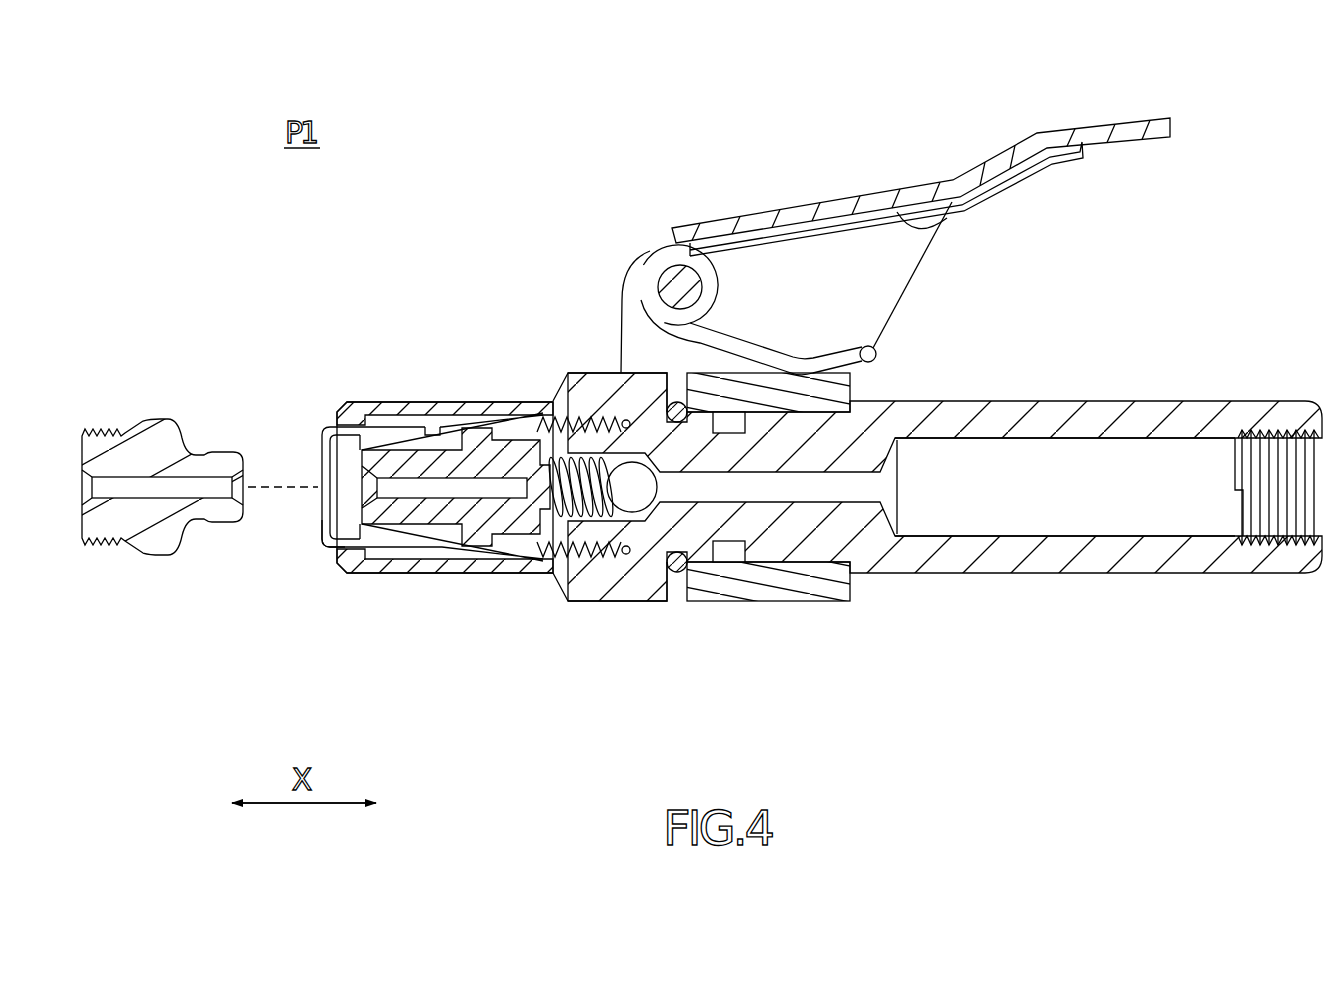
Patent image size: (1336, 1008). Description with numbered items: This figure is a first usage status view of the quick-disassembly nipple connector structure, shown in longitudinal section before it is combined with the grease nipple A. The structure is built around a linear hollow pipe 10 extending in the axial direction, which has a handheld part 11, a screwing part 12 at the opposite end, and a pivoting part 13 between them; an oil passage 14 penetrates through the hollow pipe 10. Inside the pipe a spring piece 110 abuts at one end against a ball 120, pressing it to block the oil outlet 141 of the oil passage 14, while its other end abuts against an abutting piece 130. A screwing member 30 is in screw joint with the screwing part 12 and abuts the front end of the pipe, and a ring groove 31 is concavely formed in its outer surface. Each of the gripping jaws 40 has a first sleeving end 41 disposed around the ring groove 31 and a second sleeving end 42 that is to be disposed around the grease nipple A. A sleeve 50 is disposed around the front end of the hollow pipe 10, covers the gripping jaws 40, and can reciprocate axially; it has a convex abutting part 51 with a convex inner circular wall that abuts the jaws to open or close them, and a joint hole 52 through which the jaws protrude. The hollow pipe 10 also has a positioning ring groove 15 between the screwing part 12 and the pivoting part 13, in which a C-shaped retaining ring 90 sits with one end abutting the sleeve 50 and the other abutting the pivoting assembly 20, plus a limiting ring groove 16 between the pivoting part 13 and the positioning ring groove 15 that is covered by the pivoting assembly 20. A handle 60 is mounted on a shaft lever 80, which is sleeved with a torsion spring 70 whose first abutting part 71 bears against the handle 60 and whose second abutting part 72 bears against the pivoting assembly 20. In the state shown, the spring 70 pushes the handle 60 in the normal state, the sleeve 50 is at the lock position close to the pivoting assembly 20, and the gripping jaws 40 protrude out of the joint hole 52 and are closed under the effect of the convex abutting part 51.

The hollow pipe 10 is at (917, 517).
The handheld part 11 is at (1160, 407).
The screwing part 12 is at (590, 601).
The pivoting part 13 is at (812, 575).
The oil passage 14 is at (972, 515).
The positioning ring groove 15 is at (703, 562).
The limiting ring groove 16 is at (727, 562).
The pivoting assembly 20 is at (794, 541).
The screwing member 30 is at (456, 548).
The ring groove 31 is at (416, 560).
The gripping jaws 40 is at (380, 502).
The first sleeving end 41 is at (432, 562).
The second sleeving end 42 is at (324, 462).
The sleeve 50 is at (445, 553).
The convex abutting part 51 is at (347, 572).
The joint hole 52 is at (333, 548).
The handle 60 is at (921, 164).
The spring 70 is at (788, 265).
The first abutting part 71 is at (932, 232).
The second abutting part 72 is at (878, 352).
The shaft lever 80 is at (684, 286).
The C-shaped retaining ring 90 is at (677, 572).
The spring piece 110 is at (570, 432).
The ball 120 is at (620, 472).
The abutting piece 130 is at (456, 438).
The oil outlet 141 is at (633, 560).
The grease nipple A is at (142, 540).